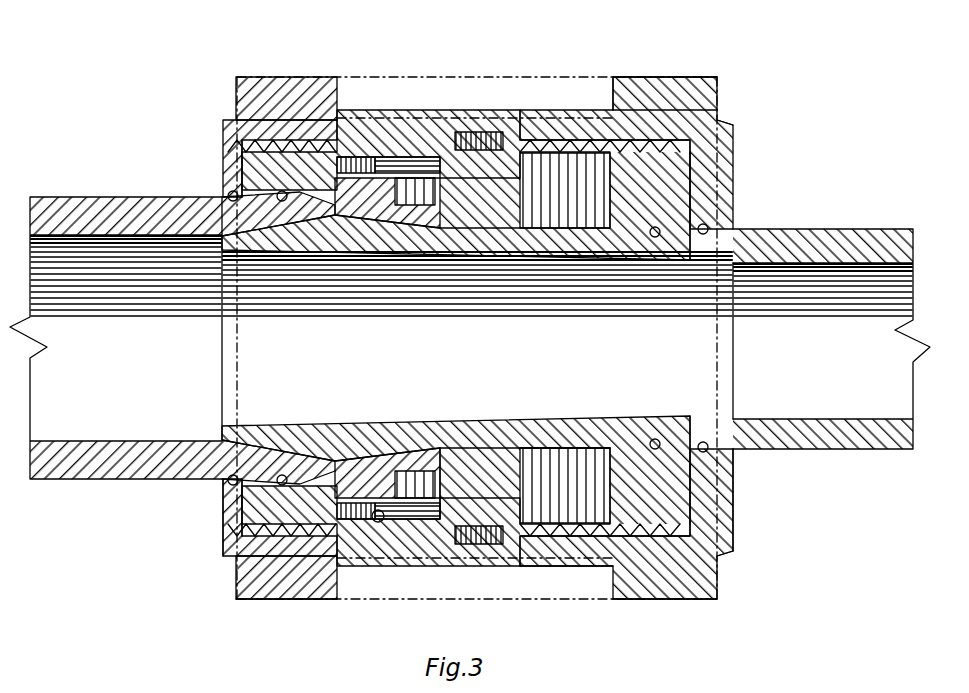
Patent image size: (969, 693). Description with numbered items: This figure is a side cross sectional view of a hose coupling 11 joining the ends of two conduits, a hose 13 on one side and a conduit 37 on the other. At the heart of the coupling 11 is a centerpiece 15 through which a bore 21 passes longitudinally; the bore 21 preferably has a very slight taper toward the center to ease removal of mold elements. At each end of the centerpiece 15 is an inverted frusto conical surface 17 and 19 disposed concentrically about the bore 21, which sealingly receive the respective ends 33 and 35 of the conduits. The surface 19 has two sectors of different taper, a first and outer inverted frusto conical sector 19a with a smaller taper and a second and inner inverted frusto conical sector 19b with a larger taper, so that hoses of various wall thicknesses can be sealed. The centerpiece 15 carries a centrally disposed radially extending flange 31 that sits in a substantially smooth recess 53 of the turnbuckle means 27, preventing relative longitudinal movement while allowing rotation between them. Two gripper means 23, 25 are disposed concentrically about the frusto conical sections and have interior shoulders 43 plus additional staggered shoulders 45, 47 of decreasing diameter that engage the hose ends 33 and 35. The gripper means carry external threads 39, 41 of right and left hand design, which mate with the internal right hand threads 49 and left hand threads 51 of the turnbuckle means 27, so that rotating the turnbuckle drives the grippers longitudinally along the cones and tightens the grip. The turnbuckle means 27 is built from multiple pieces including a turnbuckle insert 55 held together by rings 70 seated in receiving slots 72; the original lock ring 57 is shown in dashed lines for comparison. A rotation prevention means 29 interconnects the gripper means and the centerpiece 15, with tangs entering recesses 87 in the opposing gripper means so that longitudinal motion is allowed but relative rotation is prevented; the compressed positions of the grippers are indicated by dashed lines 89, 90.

The coupling 11 is at (104, 78).
The hose 13 is at (93, 199).
The centerpiece 15 is at (450, 512).
The inverted frusto conical surface 17 is at (652, 215).
The inverted frusto conical surface 19 is at (320, 228).
The first and outer inverted frusto conical sector 19a is at (110, 446).
The second and inner inverted frusto conical sector 19b is at (230, 495).
The bore 21 is at (725, 338).
The gripper means 23 is at (720, 500).
The gripper means 25 is at (290, 172).
The turnbuckle means 27 is at (513, 103).
The rotation prevention means 29 is at (478, 128).
The radially extending flange 31 is at (560, 185).
The end of conduit 33 is at (560, 482).
The end of conduit 35 is at (350, 165).
The conduit 37 is at (850, 229).
The external threads 39 is at (705, 142).
The external threads 41 is at (290, 100).
The shoulder 43 is at (372, 196).
The additional shoulder 45 is at (257, 147).
The additional shoulder 47 is at (233, 195).
The right hand threads 49 is at (725, 556).
The left hand threads 51 is at (233, 515).
The recess 53 is at (410, 505).
The turnbuckle insert 55 is at (690, 556).
The lock ring 57 is at (527, 576).
The ring 70 is at (665, 95).
The receiving slot 72 is at (725, 122).
The recess 87 is at (650, 150).
The dashed line 89 is at (378, 522).
The dashed line 90 is at (305, 575).